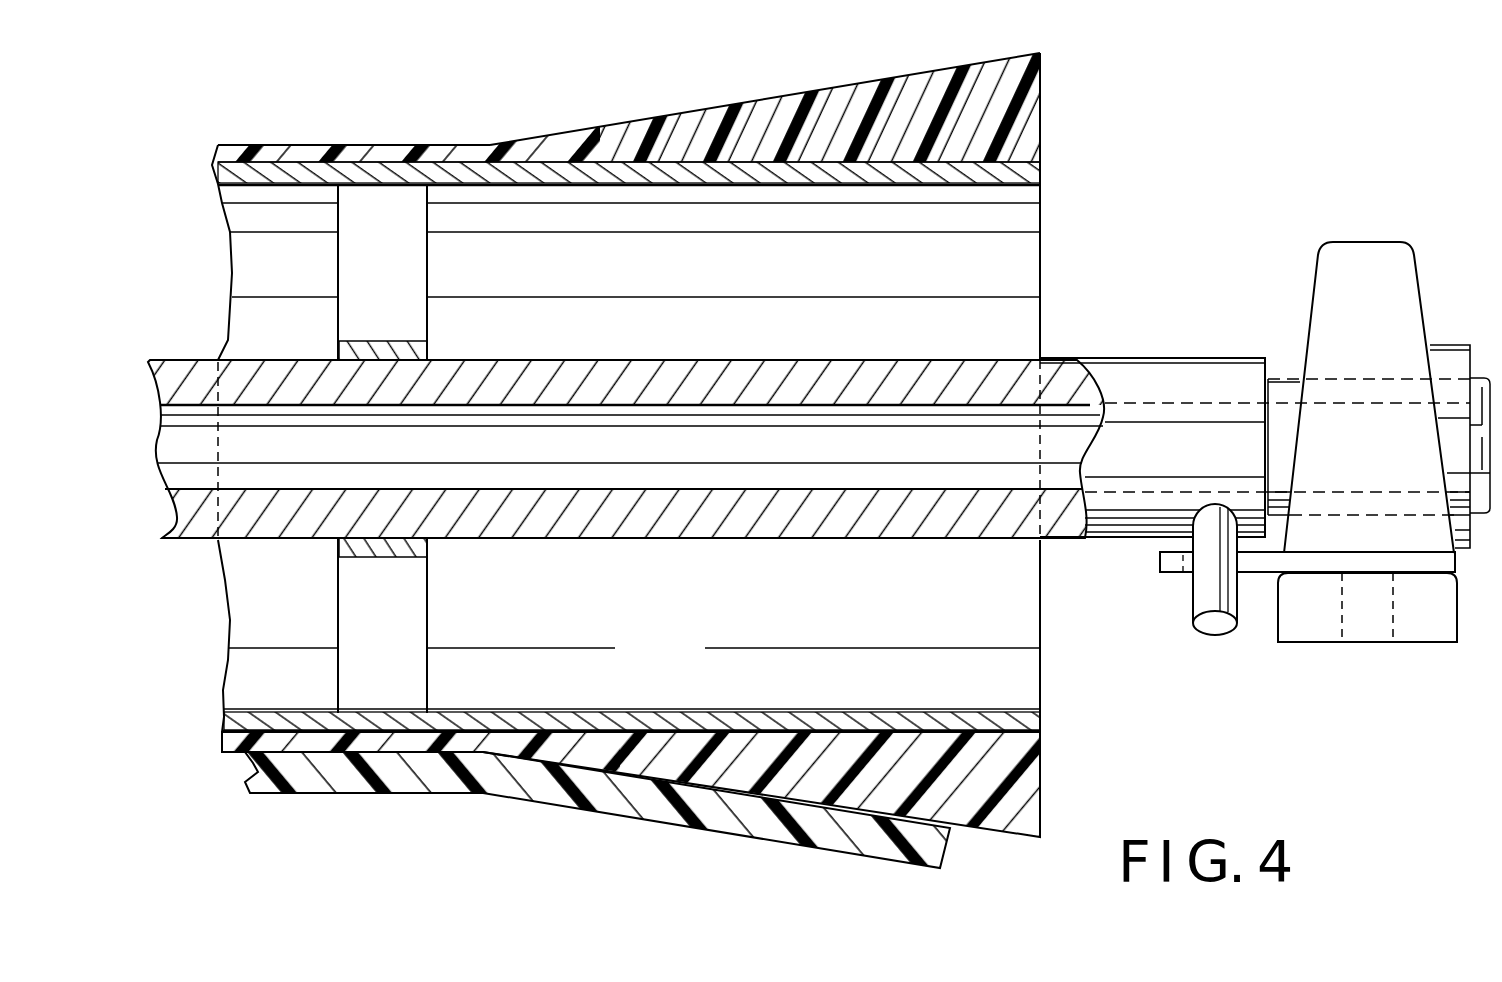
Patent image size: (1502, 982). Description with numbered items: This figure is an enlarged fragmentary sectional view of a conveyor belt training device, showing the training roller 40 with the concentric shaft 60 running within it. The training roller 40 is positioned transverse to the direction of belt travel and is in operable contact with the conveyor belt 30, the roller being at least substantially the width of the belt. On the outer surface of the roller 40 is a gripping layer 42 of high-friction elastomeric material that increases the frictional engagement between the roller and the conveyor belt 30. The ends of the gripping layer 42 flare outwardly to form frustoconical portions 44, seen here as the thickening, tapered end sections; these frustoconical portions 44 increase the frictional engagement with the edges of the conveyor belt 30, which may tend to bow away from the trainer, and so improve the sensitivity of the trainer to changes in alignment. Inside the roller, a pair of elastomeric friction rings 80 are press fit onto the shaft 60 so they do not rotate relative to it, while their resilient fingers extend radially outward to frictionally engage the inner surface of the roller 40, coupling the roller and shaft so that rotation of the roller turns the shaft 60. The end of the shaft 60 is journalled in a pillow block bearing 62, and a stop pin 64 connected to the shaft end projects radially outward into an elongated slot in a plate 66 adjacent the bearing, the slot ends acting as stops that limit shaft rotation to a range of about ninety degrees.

The conveyor belt 30 is at (616, 803).
The training roller 40 is at (524, 176).
The gripping layer 42 is at (377, 150).
The frustoconical portions 44 is at (735, 108).
The shaft 60 is at (835, 372).
The pillow block bearing 62 is at (1390, 252).
The stop pin 64 is at (1200, 620).
The plate 66 is at (1238, 557).
The elastomeric friction rings 80 is at (398, 610).